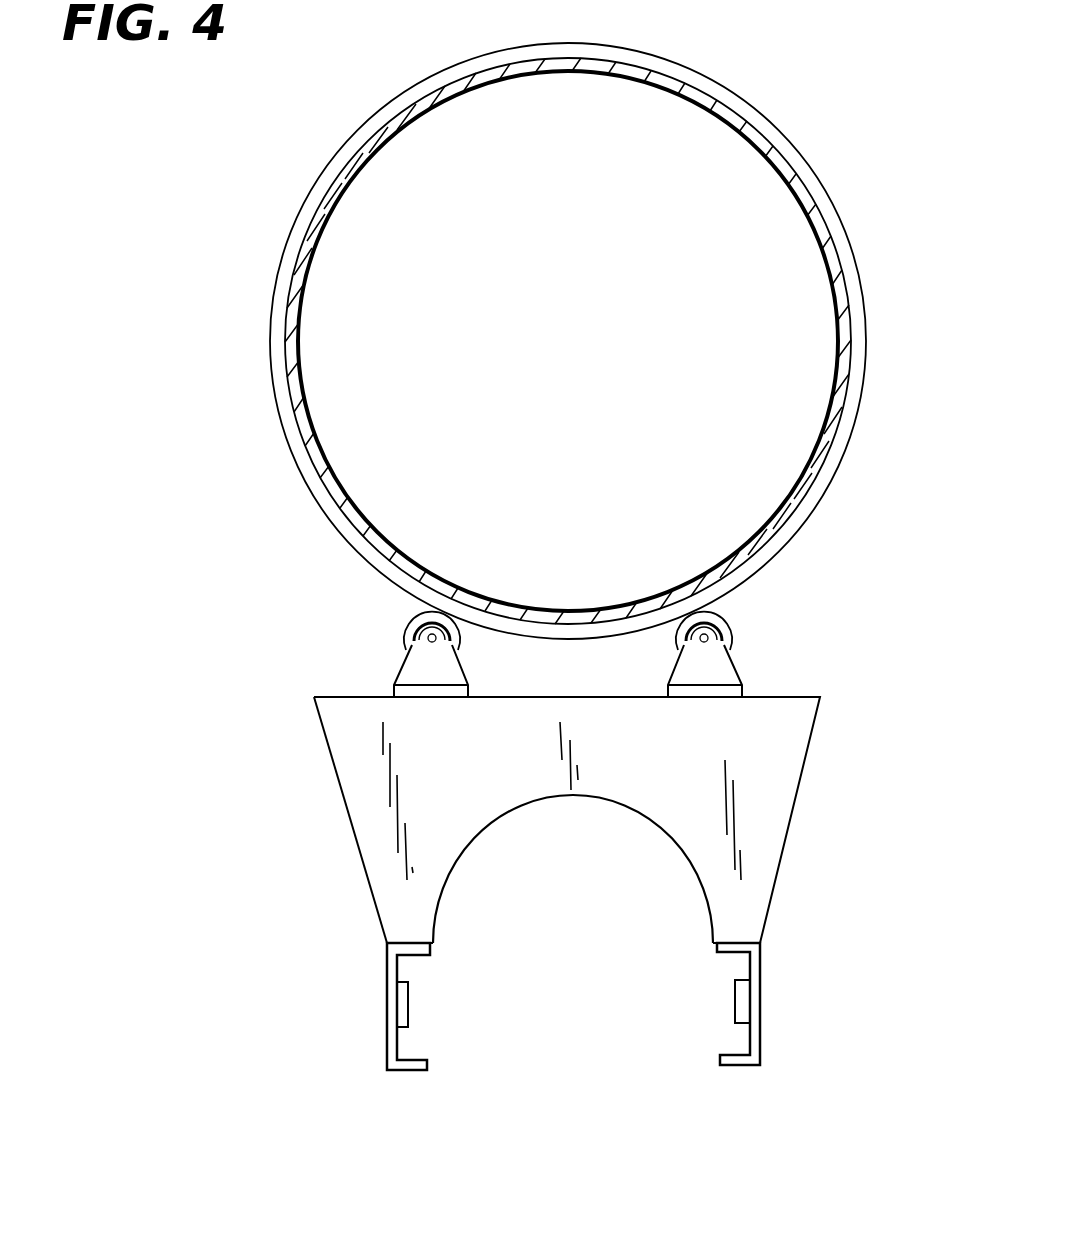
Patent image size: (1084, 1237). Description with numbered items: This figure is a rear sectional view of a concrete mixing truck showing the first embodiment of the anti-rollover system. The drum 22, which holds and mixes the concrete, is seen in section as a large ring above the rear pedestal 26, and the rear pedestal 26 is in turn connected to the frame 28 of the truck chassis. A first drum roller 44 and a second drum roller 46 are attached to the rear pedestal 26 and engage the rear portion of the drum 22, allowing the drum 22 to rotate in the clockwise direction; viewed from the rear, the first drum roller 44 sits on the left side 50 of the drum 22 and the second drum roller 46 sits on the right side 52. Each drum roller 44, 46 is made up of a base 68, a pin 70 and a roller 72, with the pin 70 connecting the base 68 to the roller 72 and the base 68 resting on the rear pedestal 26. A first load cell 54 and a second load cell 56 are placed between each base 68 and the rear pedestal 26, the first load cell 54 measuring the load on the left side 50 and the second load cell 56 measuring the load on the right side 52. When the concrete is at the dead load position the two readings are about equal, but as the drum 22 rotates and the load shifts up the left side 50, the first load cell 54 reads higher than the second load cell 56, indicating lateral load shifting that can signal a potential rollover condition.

The drum 22 is at (552, 341).
The left side of the drum 50 is at (272, 330).
The right side of the drum 52 is at (851, 281).
The rear pedestal 26 is at (768, 838).
The frame 28 is at (374, 1042).
The first drum roller 44 is at (408, 657).
The second drum roller 46 is at (722, 622).
The pin 70 is at (385, 615).
The roller 72 is at (414, 622).
The base 68 is at (452, 673).
The first load cell 54 is at (432, 690).
The second load cell 56 is at (702, 690).